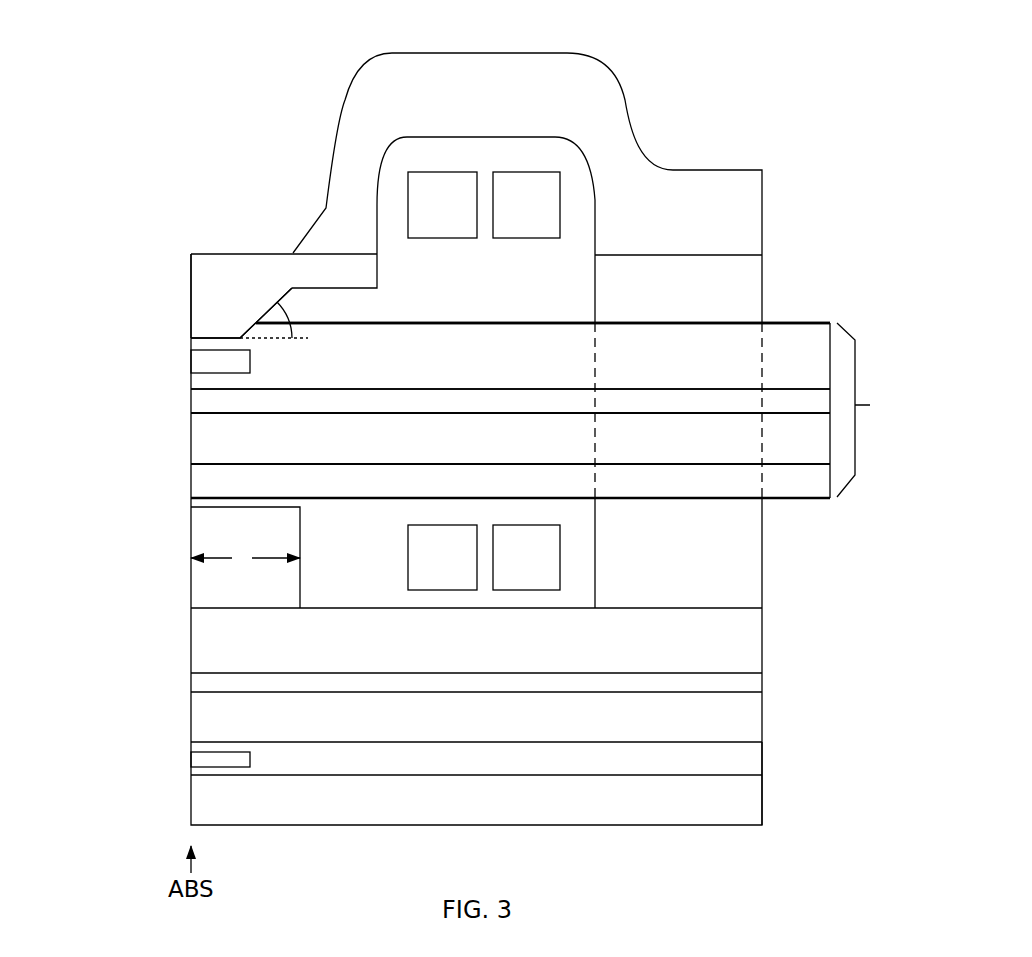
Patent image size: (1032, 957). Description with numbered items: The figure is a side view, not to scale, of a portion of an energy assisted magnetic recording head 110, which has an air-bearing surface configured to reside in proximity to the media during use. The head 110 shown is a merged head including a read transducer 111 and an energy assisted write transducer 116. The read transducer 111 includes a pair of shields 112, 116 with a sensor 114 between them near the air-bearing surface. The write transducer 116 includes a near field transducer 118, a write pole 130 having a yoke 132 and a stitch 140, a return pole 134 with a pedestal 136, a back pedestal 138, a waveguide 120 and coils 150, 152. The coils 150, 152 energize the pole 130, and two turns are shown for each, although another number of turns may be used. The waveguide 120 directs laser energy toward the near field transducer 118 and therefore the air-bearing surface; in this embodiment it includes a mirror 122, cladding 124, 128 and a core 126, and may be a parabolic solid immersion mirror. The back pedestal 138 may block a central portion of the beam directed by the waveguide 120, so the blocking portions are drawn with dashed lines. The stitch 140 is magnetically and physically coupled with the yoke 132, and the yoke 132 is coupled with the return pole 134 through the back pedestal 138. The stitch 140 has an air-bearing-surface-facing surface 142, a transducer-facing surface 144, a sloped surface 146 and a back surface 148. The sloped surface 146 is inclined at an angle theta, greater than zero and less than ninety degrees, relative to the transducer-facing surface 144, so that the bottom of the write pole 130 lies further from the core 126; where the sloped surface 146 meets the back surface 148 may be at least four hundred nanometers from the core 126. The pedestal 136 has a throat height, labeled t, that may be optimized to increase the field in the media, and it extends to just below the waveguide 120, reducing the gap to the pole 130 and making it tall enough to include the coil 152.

The EAMR head 110 is at (500, 32).
The read transducer 111 is at (815, 760).
The shield 112 is at (277, 826).
The sensor 114 is at (191, 758).
The EAMR write transducer 116 is at (104, 594).
The NFT 118 is at (191, 360).
The waveguide 120 is at (547, 410).
The mirror 122 is at (191, 489).
The cladding 124 is at (191, 436).
The core 126 is at (191, 403).
The cladding 128 is at (810, 323).
The write pole 130 is at (170, 171).
The yoke 132 is at (345, 103).
The return pole 134 is at (191, 640).
The pedestal 136 is at (191, 573).
The back pedestal 138 is at (762, 573).
The stitch 140 is at (191, 254).
The ABS-facing surface 142 is at (171, 276).
The NFT-facing surface 144 is at (207, 326).
The sloped surface 146 is at (254, 301).
The back surface 148 is at (341, 279).
The coil 150 is at (569, 222).
The coil 152 is at (569, 575).